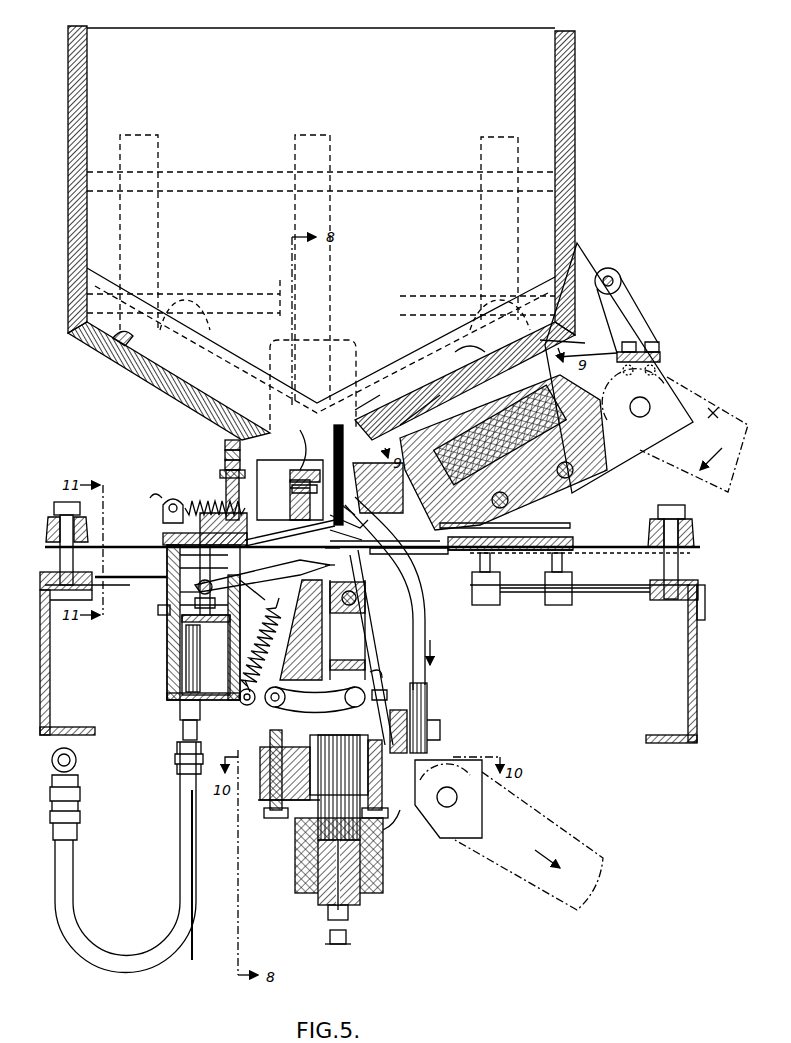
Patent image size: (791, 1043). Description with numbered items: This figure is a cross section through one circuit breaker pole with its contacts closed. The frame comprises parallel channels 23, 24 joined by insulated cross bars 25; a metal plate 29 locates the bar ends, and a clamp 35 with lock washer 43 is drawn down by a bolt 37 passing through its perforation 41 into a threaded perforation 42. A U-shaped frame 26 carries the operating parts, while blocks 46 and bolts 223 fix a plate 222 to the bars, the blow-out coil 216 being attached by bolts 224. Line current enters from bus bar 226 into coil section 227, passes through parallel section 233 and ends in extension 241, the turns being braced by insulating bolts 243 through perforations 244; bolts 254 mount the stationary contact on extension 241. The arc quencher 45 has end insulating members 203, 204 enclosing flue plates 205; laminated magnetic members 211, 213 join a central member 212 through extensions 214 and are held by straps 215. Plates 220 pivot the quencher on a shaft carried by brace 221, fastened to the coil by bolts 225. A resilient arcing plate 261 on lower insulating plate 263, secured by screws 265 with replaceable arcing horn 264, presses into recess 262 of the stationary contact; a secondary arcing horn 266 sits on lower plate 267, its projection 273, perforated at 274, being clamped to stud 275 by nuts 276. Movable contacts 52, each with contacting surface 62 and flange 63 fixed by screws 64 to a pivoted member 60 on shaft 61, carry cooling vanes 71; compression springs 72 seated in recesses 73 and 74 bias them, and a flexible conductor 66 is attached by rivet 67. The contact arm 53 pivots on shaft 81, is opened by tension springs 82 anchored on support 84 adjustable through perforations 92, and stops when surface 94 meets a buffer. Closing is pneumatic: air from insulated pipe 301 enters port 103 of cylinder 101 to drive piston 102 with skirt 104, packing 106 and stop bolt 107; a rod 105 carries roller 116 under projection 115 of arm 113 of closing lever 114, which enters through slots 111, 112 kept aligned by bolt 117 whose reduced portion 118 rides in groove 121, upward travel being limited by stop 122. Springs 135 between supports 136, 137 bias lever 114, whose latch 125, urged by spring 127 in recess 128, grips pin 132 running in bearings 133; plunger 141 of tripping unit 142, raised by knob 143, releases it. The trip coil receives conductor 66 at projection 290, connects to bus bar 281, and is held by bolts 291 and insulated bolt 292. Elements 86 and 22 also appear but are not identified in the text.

The arc quenching unit 45 is at (352, 24).
The parallel insulating plates 205 is at (321, 42).
The end insulating member 203 is at (68, 70).
The end insulating member 204 is at (578, 130).
The magnetizable member 211 is at (148, 133).
The central magnetic member 212 is at (318, 133).
The magnetizable member 213 is at (490, 135).
The straps 215 is at (455, 173).
The extensions 214 is at (270, 295).
The replaceable arcing horn 264 is at (500, 295).
The secondary arcing horn 266 is at (128, 344).
The lower insulating plate 267 is at (112, 352).
The plates 220 is at (600, 272).
The metallic brace 221 is at (632, 315).
The bolts 225 is at (650, 345).
The coil section 227 is at (650, 398).
The bus bar 226 is at (700, 420).
The parallel coil section 233 is at (585, 450).
The insulating bolts 243 is at (610, 470).
The coil 216 is at (605, 485).
The aligned perforations 244 is at (585, 500).
The lower insulating plate 263 is at (365, 400).
The screws 265 is at (470, 352).
The conductive arcing plate 261 is at (425, 380).
The bolts 254 is at (365, 410).
The recess 262 is at (344, 440).
The shaft 61 is at (323, 440).
The contacting surface 62 is at (300, 445).
The movable contacts 52 is at (300, 470).
The supporting flange 63 is at (283, 484).
The screws 64 is at (302, 485).
The recesses 74 is at (258, 495).
The vertical vanes 71 is at (240, 512).
The compression springs 72 is at (260, 520).
The recesses 73 is at (262, 535).
The contact carrying member 60 is at (352, 495).
The rivet 67 is at (362, 521).
The flexible conductor 66 is at (364, 533).
The coil extension 241 is at (440, 528).
The surface 94 is at (337, 554).
The spring support 137 is at (338, 568).
The stud 275 is at (225, 441).
The adjustable nuts 276 is at (225, 452).
The integral projection 273 is at (225, 462).
The perforation 274 is at (222, 470).
The tension springs 82 is at (212, 503).
The perforations 92 is at (150, 498).
The bracket 86 is at (165, 500).
The spring support 84 is at (145, 510).
The U-shaped frame 26 is at (45, 549).
The cross bars 25 is at (610, 553).
The channel 23 is at (42, 640).
The channel 24 is at (698, 640).
The bolt 37 is at (55, 508).
The clamping member 35 is at (48, 528).
The lock washer 43 is at (690, 525).
The central perforation 41 is at (690, 536).
The metal plate 29 is at (702, 590).
The metallic blocks 46 is at (522, 596).
The plate 222 is at (500, 590).
The threaded perforation 42 is at (600, 594).
The bolts 224 is at (450, 545).
The bolts 223 is at (495, 558).
The stop 122 is at (163, 537).
The compressed air cylinder 101 is at (164, 660).
The piston 102 is at (206, 655).
The bolt 107 is at (203, 658).
The cylindrical skirt 104 is at (170, 555).
The projection 115 is at (172, 568).
The axial groove 121 is at (131, 574).
The rod 105 is at (180, 590).
The roller 116 is at (180, 600).
The bolt 117 is at (158, 612).
The packing member 106 is at (180, 625).
The unthreaded portion 118 is at (209, 598).
The port 103 is at (180, 707).
The flat extension 113 is at (245, 578).
The slot 112 is at (249, 591).
The slot 111 is at (240, 600).
The tension springs 135 is at (261, 645).
The compression spring 127 is at (328, 660).
The shaft 81 is at (365, 600).
The contact closing lever 114 is at (366, 632).
The contact carrying arm 53 is at (370, 645).
The recess 128 is at (306, 702).
The spring support 136 is at (240, 702).
The pin 132 is at (378, 678).
The ball bearings 133 is at (380, 696).
The integral projection 290 is at (428, 715).
The bolt 292 is at (272, 780).
The latch 125 is at (273, 768).
The plunger 141 is at (375, 738).
The tripping unit 142 is at (385, 866).
The uninsulated bolts 291 is at (392, 845).
The plunger knob 143 is at (352, 940).
The bus bar 281 is at (530, 827).
The insulated pipe 301 is at (180, 858).
The hose eye fitting 22 is at (77, 762).